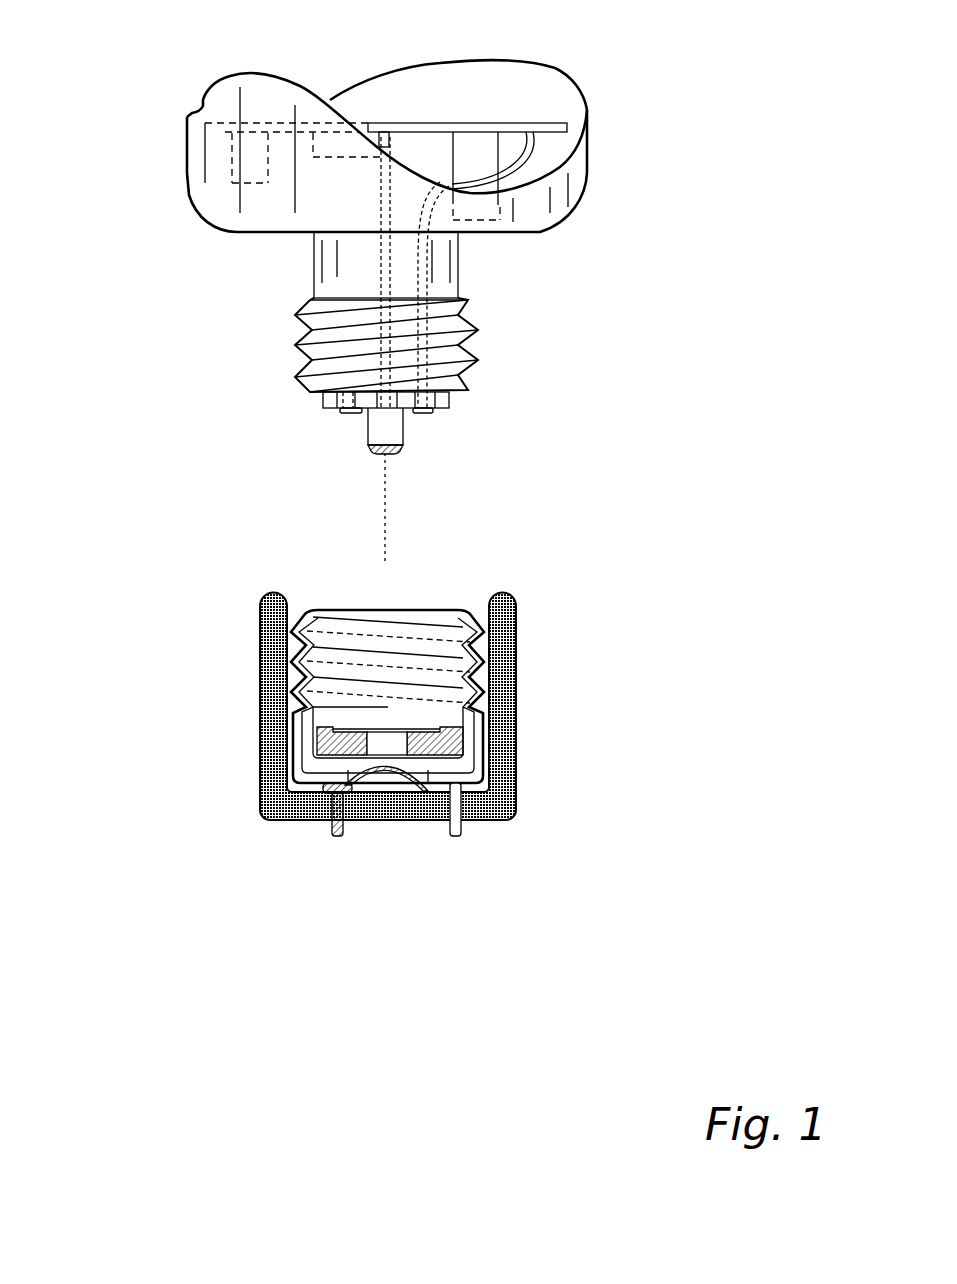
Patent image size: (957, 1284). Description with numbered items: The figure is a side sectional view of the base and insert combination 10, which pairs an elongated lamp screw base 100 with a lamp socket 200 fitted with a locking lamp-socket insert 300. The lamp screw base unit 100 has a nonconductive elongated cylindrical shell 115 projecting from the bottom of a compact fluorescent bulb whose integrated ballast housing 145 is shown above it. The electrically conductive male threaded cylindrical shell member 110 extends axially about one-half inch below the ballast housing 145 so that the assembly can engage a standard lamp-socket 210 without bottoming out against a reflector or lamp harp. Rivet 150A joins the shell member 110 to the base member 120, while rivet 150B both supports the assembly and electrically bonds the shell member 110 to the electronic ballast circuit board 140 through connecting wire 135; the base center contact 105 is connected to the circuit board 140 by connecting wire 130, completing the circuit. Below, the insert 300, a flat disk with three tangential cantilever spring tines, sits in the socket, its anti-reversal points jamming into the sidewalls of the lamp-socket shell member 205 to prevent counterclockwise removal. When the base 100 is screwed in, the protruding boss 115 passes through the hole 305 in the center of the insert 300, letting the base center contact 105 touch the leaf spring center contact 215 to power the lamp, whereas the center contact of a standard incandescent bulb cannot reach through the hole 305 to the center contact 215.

The base and insert combination 10 is at (115, 90).
The lamp screw base unit 100 is at (188, 300).
The base center contact 105 is at (382, 455).
The base male threaded cylindrical shell member 110 is at (477, 362).
The nonconductive elongated cylindrical shell 115 is at (460, 263).
The base member 120 is at (405, 442).
The connecting wire 130 is at (390, 137).
The connecting wire 135 is at (542, 145).
The electronic ballast circuit board 140 is at (550, 128).
The ballast housing 145 is at (187, 170).
The rivet 150A is at (343, 412).
The rivet 150B is at (430, 412).
The lamp socket 200 is at (190, 589).
The lamp-socket shell member 205 is at (468, 612).
The standard lamp-socket 210 is at (515, 653).
The leaf spring center contact 215 is at (325, 793).
The lamp-socket insert 300 is at (333, 740).
The hole 305 is at (387, 743).